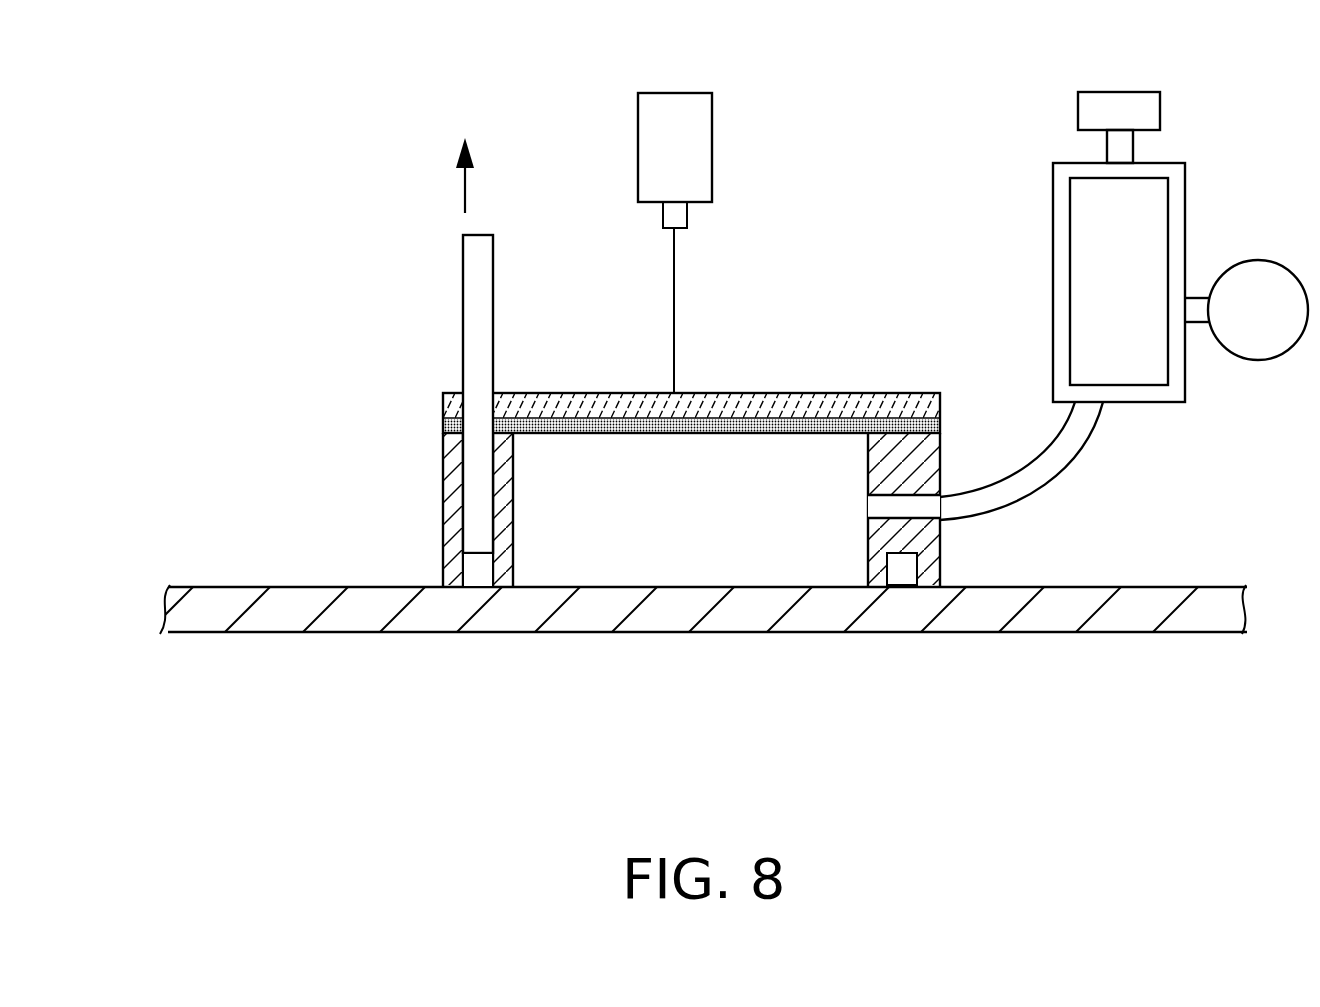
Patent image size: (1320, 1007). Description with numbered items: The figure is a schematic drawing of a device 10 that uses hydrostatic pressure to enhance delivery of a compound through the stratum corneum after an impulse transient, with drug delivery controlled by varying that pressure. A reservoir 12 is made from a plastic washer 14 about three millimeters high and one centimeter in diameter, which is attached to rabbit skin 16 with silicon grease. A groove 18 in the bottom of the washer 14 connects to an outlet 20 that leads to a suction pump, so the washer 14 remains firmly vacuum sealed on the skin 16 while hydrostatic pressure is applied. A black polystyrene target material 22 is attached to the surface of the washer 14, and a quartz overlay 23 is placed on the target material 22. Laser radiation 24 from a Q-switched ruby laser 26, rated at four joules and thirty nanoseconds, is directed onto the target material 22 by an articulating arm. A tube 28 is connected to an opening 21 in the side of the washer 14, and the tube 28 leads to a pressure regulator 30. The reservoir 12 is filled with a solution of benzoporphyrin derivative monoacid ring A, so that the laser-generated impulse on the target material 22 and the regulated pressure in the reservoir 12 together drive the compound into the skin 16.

The device 10 is at (444, 82).
The reservoir 12 is at (695, 443).
The plastic washer 14 is at (941, 441).
The rabbit skin 16 is at (745, 633).
The groove 18 is at (490, 567).
The outlet 20 is at (462, 237).
The opening 21 is at (942, 523).
The target material 22 is at (443, 423).
The quartz overlay 23 is at (443, 405).
The laser radiation 24 is at (675, 290).
The Q-switched ruby laser 26 is at (713, 110).
The tube 28 is at (1080, 431).
The pressure regulator 30 is at (1186, 222).